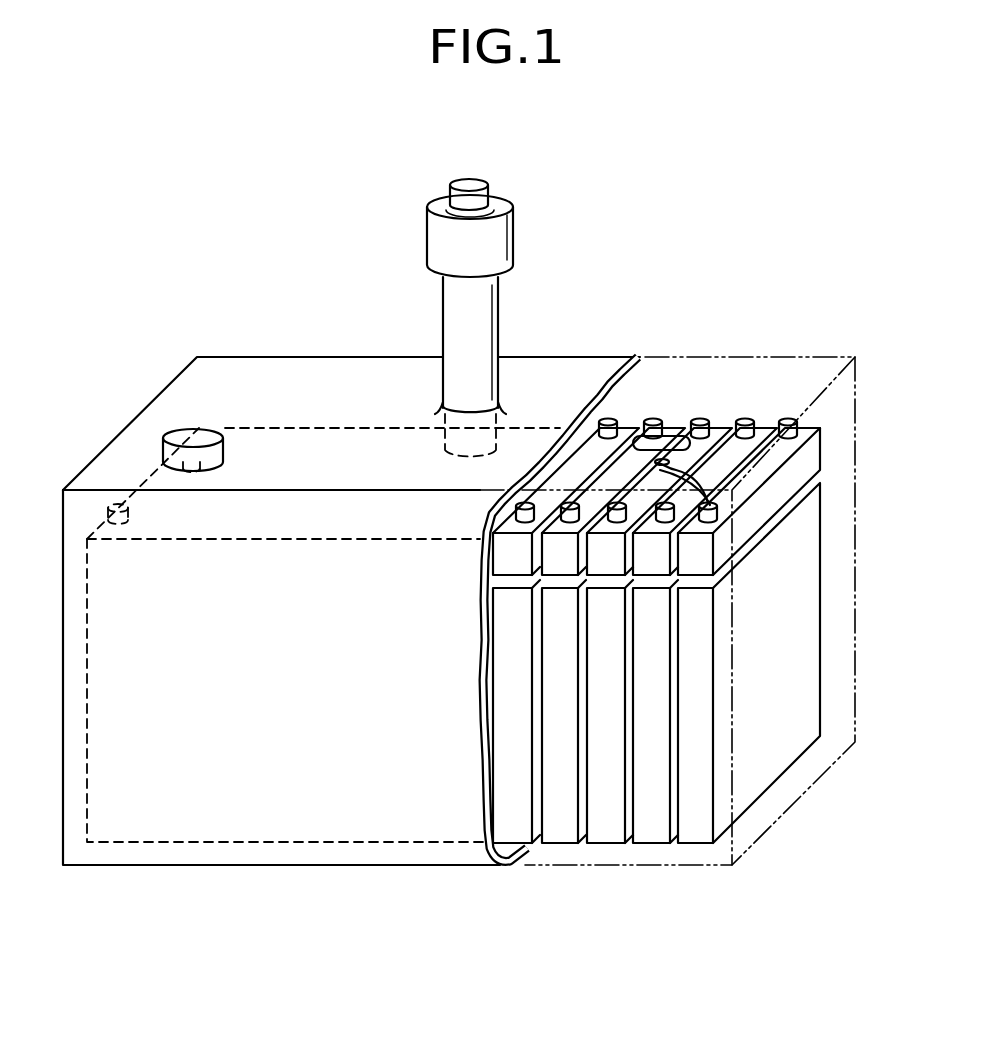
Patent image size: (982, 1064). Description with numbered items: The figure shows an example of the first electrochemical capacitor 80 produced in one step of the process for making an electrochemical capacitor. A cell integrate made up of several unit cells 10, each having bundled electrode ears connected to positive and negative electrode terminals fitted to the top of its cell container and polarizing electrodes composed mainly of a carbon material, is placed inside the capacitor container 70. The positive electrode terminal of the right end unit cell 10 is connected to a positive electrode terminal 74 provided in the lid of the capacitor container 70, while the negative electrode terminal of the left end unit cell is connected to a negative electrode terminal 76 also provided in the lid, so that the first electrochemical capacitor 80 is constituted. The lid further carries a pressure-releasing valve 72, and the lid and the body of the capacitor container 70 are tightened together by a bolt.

The unit cell 10 is at (608, 828).
The capacitor container 70 is at (218, 866).
The pressure-releasing valve 72 is at (500, 243).
The positive electrode terminal 74 is at (672, 440).
The negative electrode terminal 76 is at (204, 440).
The first electrochemical capacitor 80 is at (747, 282).